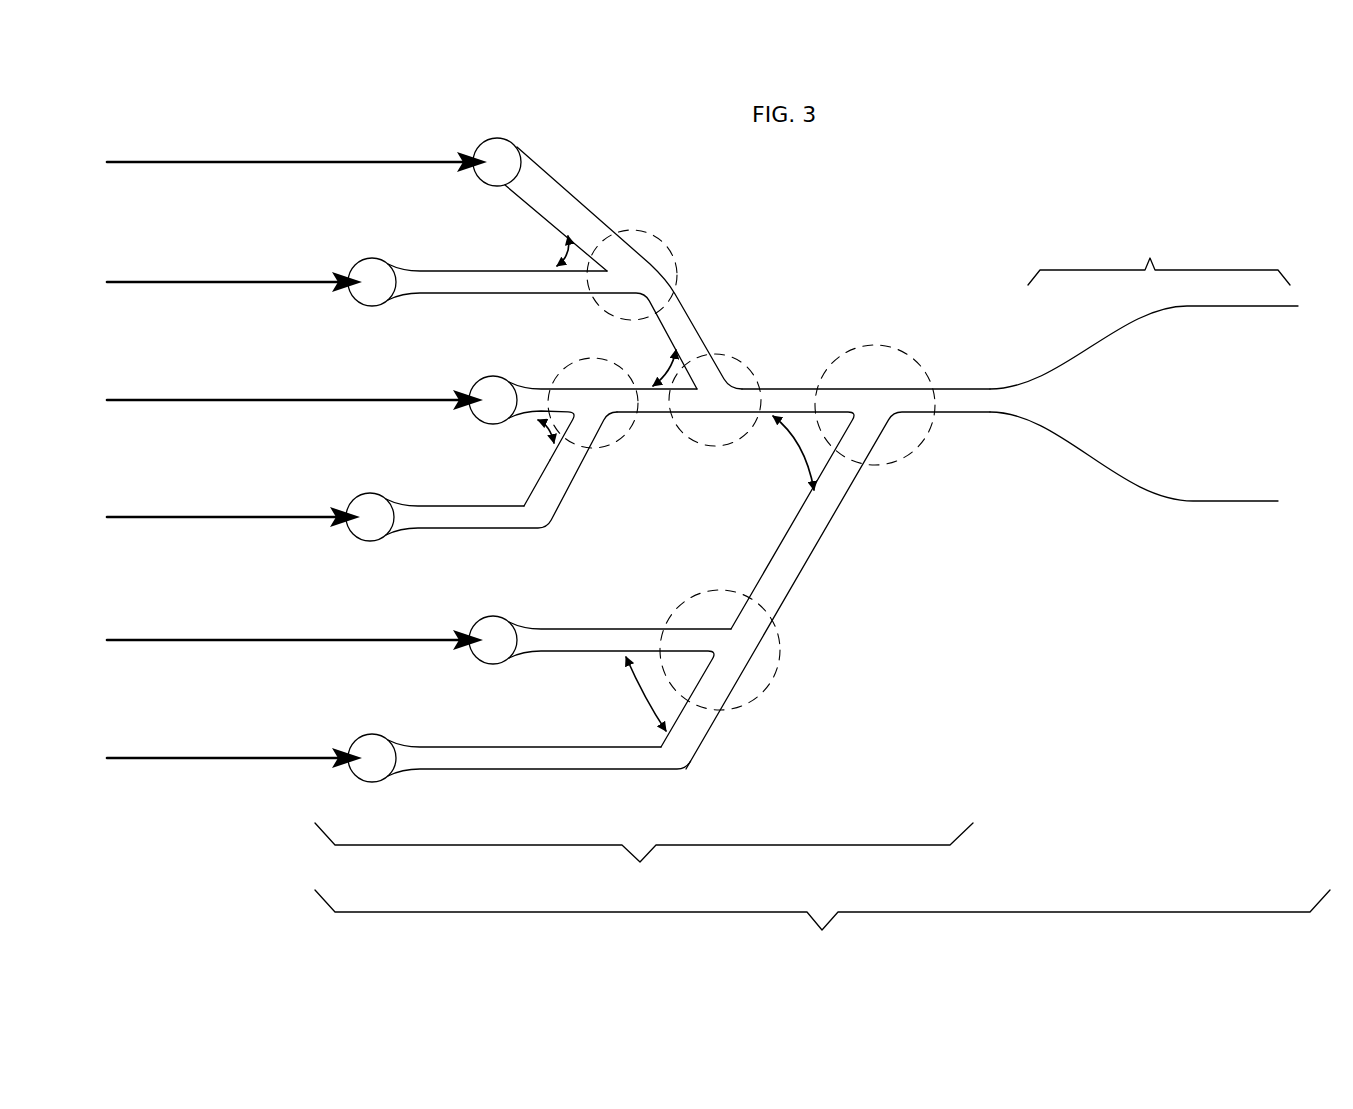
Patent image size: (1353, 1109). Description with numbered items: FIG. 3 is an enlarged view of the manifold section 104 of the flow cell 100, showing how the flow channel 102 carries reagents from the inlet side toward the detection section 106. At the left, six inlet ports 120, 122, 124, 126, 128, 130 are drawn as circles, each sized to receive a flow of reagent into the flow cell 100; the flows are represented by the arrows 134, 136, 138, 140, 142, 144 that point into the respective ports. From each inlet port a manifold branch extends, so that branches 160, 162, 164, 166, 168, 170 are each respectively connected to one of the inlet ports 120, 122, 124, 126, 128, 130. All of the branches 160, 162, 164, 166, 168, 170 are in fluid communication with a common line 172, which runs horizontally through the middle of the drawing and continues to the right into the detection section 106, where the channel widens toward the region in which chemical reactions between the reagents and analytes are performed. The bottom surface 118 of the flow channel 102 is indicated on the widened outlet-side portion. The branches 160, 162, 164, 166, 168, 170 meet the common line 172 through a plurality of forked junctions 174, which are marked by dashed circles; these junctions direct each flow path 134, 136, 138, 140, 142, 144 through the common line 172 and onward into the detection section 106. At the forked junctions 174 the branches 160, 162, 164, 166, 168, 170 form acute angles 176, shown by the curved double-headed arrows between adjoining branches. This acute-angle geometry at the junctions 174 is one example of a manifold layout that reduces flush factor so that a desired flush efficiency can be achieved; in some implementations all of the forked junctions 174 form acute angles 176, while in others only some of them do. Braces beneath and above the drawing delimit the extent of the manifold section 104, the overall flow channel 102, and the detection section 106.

The flow cell 100 is at (1022, 145).
The flow channel 102 is at (822, 928).
The manifold section 104 is at (644, 860).
The detection section 106 is at (1159, 260).
The bottom surface 118 is at (1100, 425).
The inlet port 120 is at (522, 147).
The inlet port 122 is at (355, 262).
The inlet port 124 is at (495, 377).
The inlet port 126 is at (355, 538).
The inlet port 128 is at (494, 616).
The inlet port 130 is at (355, 775).
The flow path arrow 134 is at (172, 162).
The flow path arrow 136 is at (152, 282).
The flow path arrow 138 is at (180, 400).
The flow path arrow 140 is at (178, 517).
The flow path arrow 142 is at (175, 640).
The flow path arrow 144 is at (168, 758).
The manifold branch 160 is at (597, 220).
The manifold branch 162 is at (464, 271).
The manifold branch 164 is at (532, 413).
The manifold branch 166 is at (580, 470).
The manifold branch 168 is at (578, 629).
The manifold branch 170 is at (565, 747).
The common line 172 is at (957, 414).
The forked junction 174 is at (678, 264).
The acute angle 176 is at (557, 250).